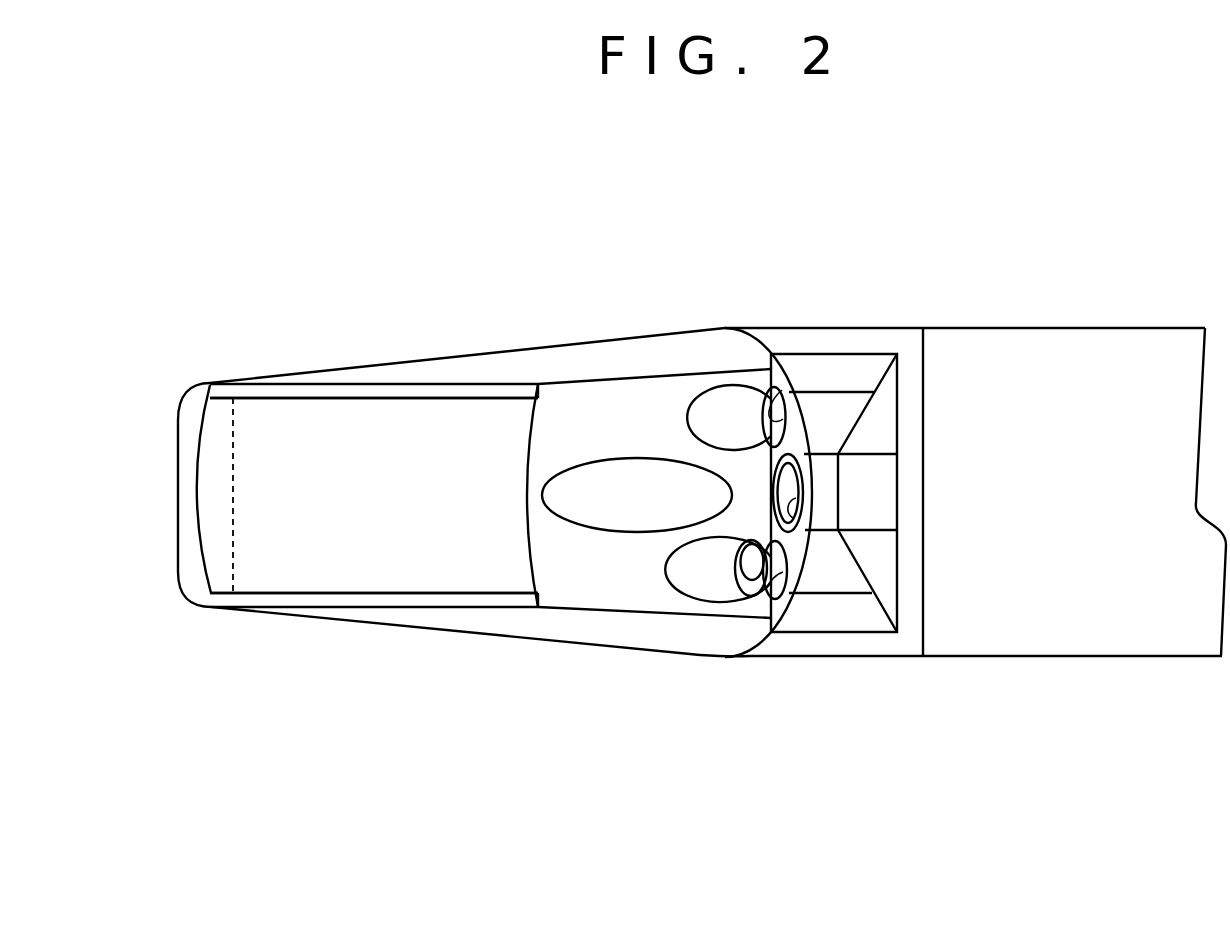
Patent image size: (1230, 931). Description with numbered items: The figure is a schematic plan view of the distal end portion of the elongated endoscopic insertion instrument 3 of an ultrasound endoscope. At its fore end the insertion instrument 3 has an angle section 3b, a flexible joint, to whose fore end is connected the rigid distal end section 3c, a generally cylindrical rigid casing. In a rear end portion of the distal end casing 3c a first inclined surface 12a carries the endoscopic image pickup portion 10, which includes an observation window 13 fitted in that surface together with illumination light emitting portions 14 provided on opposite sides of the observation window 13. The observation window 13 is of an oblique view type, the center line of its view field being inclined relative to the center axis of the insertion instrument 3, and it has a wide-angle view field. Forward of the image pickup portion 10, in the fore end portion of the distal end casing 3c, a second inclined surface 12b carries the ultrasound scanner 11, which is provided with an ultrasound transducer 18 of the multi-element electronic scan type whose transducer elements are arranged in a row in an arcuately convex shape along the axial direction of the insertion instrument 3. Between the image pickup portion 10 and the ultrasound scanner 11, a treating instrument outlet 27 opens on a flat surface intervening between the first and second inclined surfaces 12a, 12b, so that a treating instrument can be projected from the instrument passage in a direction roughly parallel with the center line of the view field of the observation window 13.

The elongated insertion instrument 3 is at (970, 282).
The angle section 3b is at (1130, 627).
The rigid distal end section 3c is at (672, 332).
The endoscopic image pickup portion 10 is at (717, 603).
The ultrasound scanner 11 is at (545, 387).
The first inclined surface 12a is at (792, 547).
The second inclined surface 12b is at (307, 387).
The observation window 13 is at (805, 533).
The illumination light emitting portions 14 is at (783, 392).
The ultrasound transducer 18 is at (415, 415).
The treating instrument outlet 27 is at (592, 522).